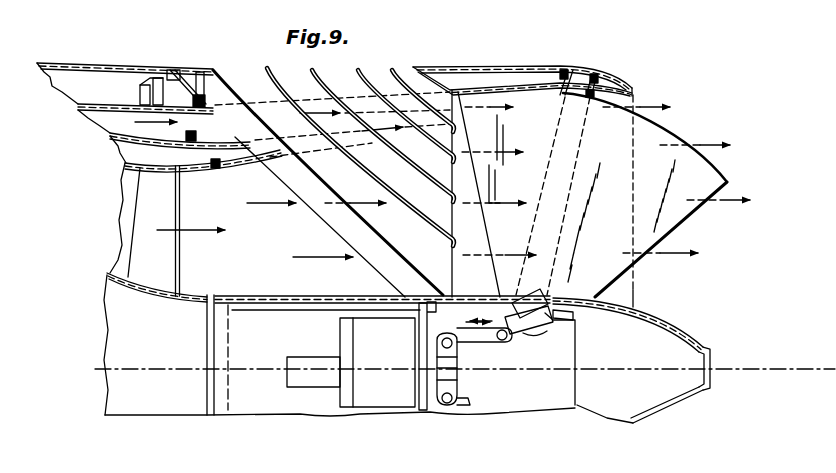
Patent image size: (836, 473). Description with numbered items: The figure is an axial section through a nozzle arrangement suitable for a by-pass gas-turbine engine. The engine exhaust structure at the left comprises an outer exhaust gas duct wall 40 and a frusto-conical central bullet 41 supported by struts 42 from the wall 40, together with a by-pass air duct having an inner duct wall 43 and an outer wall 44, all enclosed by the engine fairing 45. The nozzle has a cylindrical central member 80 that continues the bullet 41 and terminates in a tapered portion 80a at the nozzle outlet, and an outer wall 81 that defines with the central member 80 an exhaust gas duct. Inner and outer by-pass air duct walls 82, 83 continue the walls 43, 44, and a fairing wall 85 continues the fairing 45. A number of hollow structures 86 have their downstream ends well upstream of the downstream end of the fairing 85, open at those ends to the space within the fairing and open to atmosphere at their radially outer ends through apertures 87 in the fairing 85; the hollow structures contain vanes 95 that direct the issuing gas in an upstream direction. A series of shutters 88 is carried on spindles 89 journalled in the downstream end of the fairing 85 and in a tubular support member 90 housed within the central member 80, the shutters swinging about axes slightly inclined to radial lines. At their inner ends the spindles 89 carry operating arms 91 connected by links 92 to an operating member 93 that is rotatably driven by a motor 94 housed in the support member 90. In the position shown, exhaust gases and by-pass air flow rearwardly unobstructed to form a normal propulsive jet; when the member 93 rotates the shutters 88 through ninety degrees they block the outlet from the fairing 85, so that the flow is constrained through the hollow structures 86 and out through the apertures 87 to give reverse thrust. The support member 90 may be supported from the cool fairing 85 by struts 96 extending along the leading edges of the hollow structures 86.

The engine fairing 45 is at (84, 66).
The outer wall of by-pass air duct 44 is at (93, 110).
The inner duct wall of by-pass air duct 43 is at (110, 134).
The outer exhaust gas duct wall 40 is at (126, 167).
The struts 42 is at (124, 196).
The central bullet 41 is at (110, 271).
The fairing wall 85 is at (191, 57).
The outer by-pass air duct wall 83 is at (204, 103).
The inner by-pass air duct wall 82 is at (213, 169).
The outer wall of nozzle 81 is at (237, 157).
The vanes 95 is at (322, 80).
The apertures 87 is at (404, 76).
The spindles 89 is at (578, 70).
The shutters 88 is at (657, 144).
The hollow structures 86 is at (358, 216).
The struts 96 is at (360, 245).
The cylindrical central member 80 is at (323, 295).
The tapered portion 80a is at (673, 326).
The tubular support member 90 is at (565, 343).
The motor 94 is at (387, 392).
The operating member 93 is at (443, 388).
The links 92 is at (483, 347).
The operating arms 91 is at (512, 322).